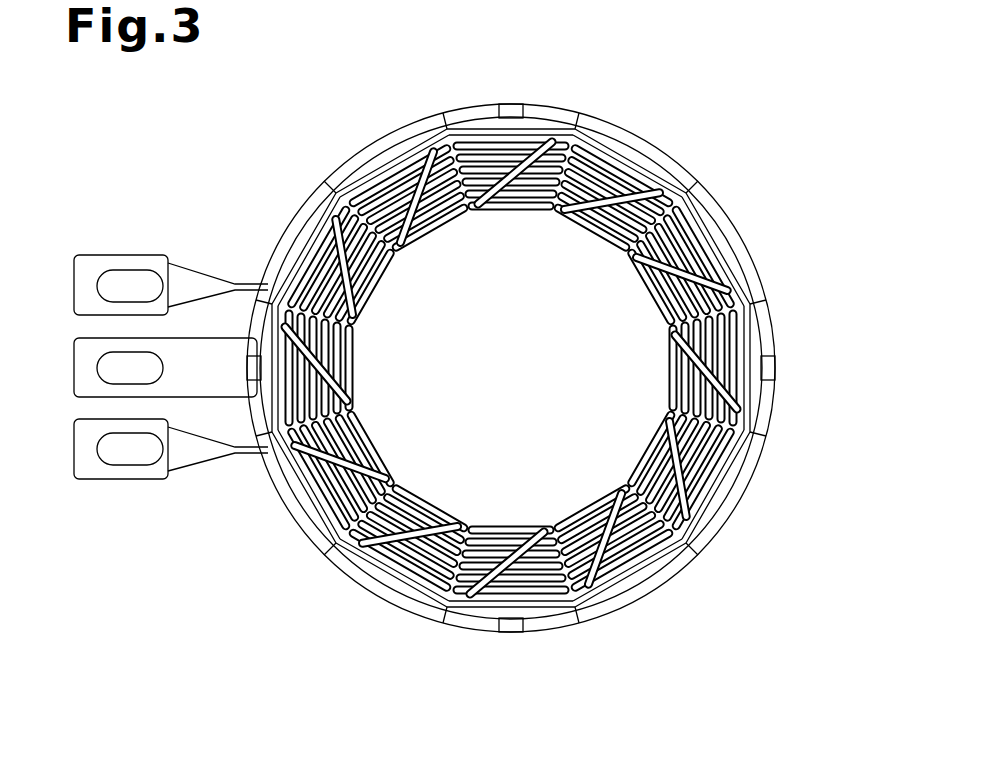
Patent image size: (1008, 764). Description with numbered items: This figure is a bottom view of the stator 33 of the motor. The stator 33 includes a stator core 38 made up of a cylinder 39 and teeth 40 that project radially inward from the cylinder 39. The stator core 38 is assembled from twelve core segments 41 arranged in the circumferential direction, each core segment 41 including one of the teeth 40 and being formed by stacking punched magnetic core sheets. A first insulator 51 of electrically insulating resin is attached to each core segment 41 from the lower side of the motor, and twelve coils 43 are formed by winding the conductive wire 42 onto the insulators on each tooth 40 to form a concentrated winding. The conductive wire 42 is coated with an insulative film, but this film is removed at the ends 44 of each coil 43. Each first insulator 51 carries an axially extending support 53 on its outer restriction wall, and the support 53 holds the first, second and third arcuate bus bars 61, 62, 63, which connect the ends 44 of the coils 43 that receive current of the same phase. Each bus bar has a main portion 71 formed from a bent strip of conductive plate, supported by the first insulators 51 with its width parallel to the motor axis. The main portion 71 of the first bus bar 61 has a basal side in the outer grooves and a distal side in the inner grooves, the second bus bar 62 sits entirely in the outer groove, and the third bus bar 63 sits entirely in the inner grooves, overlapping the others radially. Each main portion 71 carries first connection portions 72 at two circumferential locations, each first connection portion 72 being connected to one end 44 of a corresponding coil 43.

The stator 33 is at (766, 192).
The stator core 38 is at (462, 116).
The cylinder 39 is at (552, 114).
The teeth 40 is at (527, 222).
The core segments 41 is at (705, 192).
The conductive wire 42 is at (363, 420).
The coils 43 is at (411, 260).
The ends 44 is at (487, 520).
The first insulator 51 is at (640, 418).
The support 53 is at (405, 606).
The first bus bar 61 is at (330, 540).
The second bus bar 62 is at (347, 177).
The third bus bar 63 is at (262, 310).
The main portion 71 is at (320, 202).
The first connection portion 72 is at (668, 366).